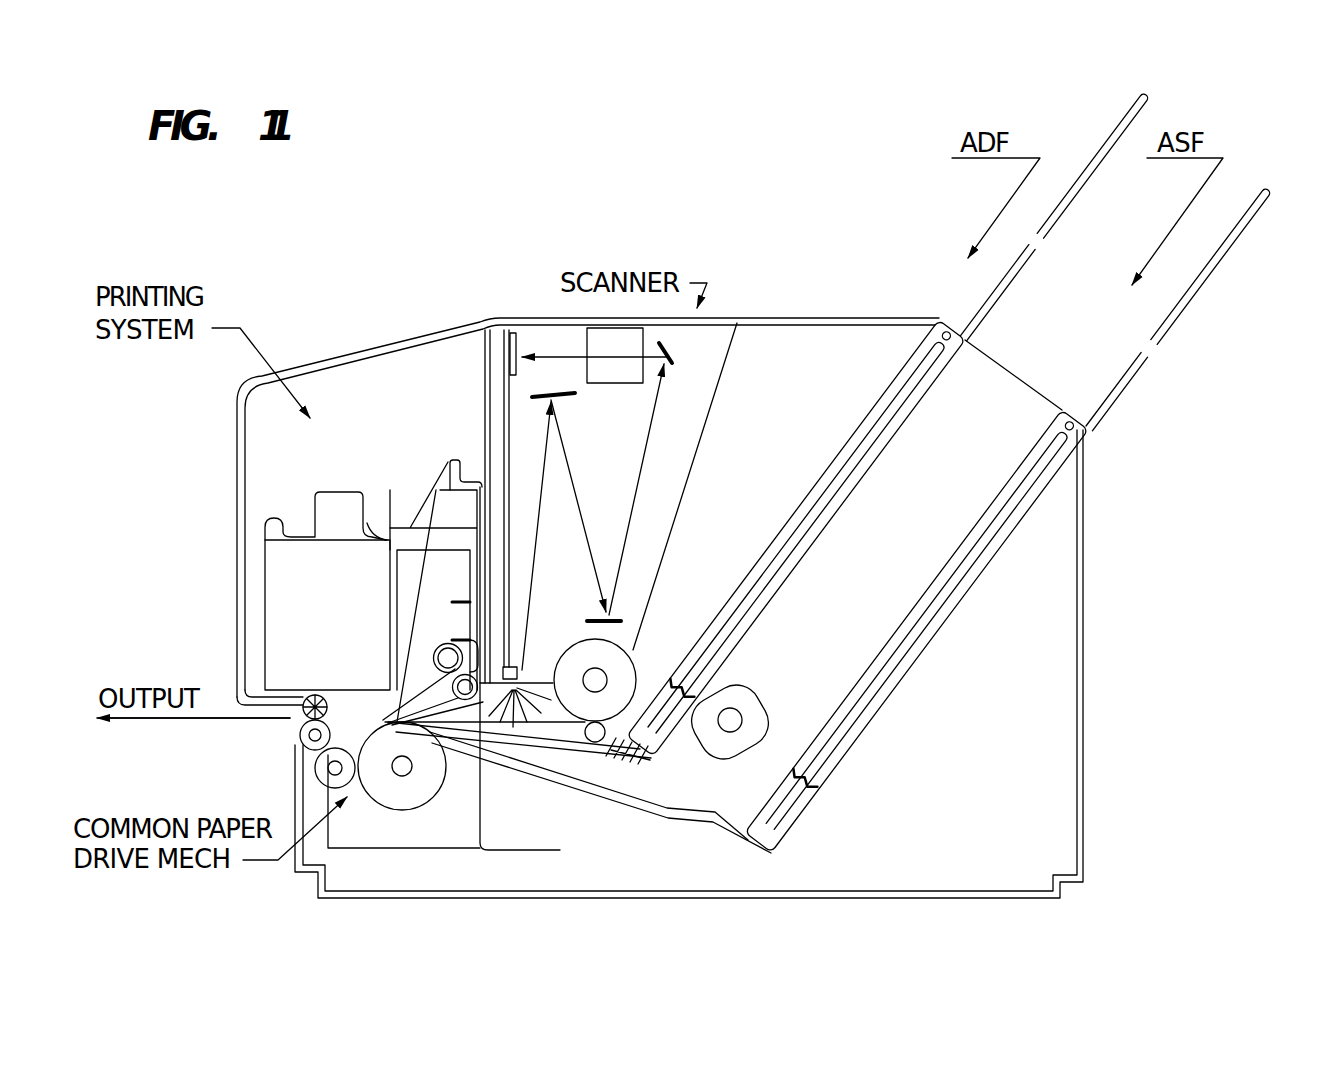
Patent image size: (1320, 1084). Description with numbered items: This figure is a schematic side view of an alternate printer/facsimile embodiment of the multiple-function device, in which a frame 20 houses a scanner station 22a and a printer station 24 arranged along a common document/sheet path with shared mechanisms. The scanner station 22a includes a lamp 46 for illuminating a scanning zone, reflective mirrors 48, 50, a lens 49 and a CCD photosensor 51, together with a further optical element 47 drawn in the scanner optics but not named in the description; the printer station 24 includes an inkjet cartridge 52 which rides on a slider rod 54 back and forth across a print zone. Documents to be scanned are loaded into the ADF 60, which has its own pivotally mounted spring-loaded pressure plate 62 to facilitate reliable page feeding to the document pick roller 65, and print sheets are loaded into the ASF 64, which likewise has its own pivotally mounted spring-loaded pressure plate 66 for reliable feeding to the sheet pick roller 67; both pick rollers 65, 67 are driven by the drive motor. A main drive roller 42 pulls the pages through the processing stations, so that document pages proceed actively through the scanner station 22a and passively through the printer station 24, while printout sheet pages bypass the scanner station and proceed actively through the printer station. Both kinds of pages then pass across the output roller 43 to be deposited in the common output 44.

The frame 20 is at (1083, 738).
The scanner station 22a is at (703, 352).
The printer station 24 is at (387, 370).
The main drive roller 42 is at (402, 810).
The output roller 43 is at (293, 736).
The common output area 44 is at (170, 722).
The lamp 46 is at (513, 668).
The mirror 47 is at (668, 350).
The reflective mirror 48 is at (532, 393).
The lens 49 is at (610, 373).
The reflective mirror 50 is at (617, 617).
The CCD photosensor 51 is at (517, 343).
The inkjet cartridge 52 is at (292, 630).
The slider rod 54 is at (437, 652).
The ADF 60 is at (1010, 204).
The pressure plate 62 is at (802, 500).
The ASF 64 is at (1180, 212).
The document pick roller 65 is at (633, 657).
The pressure plate 66 is at (860, 679).
The sheet pick roller 67 is at (700, 735).